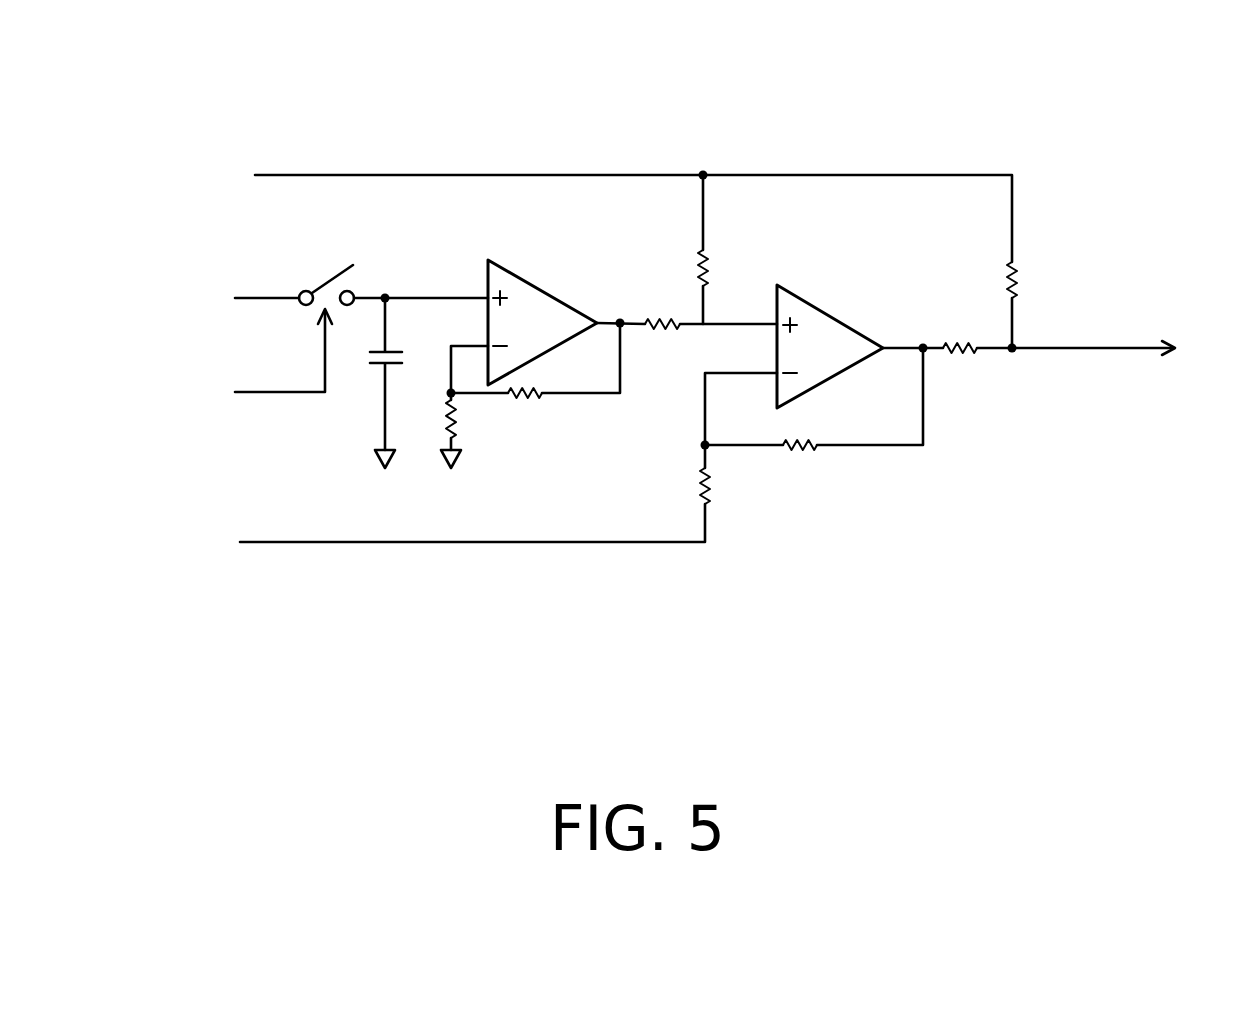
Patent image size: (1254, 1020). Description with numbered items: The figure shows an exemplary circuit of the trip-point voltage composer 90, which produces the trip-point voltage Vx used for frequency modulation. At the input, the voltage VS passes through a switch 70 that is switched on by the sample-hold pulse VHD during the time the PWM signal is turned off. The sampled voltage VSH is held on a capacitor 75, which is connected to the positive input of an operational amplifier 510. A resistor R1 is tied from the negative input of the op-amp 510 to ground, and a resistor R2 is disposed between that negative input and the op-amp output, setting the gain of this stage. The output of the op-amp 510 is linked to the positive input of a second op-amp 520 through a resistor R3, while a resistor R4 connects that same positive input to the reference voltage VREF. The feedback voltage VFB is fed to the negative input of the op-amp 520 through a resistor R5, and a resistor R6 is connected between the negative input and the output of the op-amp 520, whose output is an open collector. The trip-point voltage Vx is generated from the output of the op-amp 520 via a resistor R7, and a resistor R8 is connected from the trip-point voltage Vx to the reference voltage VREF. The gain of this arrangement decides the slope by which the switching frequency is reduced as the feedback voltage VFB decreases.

The trip-point voltage composer 90 is at (701, 314).
The switch 70 is at (331, 275).
The capacitor 75 is at (366, 361).
The operational amplifier 510 is at (535, 286).
The op-amp 520 is at (825, 313).
The resistor R1 is at (476, 423).
The resistor R2 is at (544, 417).
The resistor R3 is at (660, 299).
The resistor R4 is at (726, 263).
The resistor R5 is at (727, 495).
The resistor R6 is at (819, 469).
The resistor R7 is at (967, 375).
The resistor R8 is at (1037, 289).